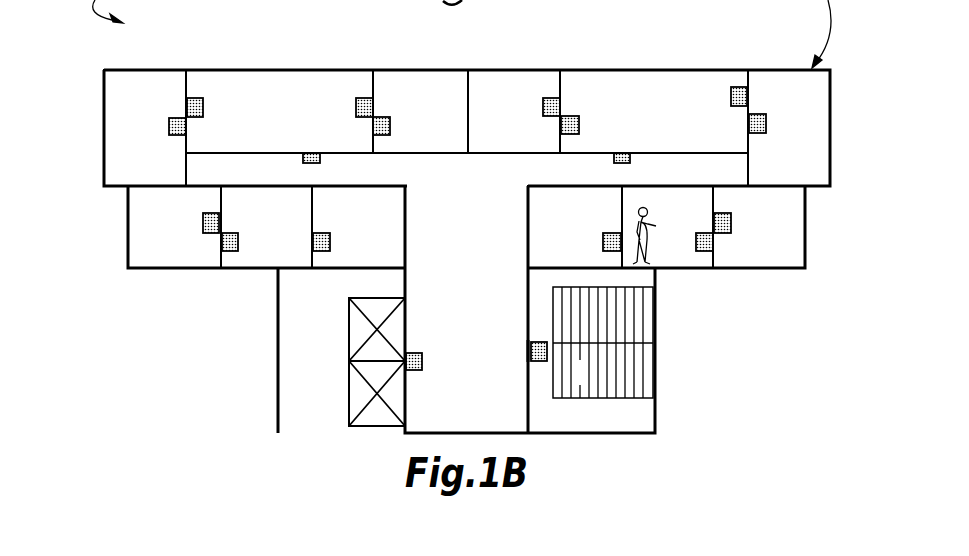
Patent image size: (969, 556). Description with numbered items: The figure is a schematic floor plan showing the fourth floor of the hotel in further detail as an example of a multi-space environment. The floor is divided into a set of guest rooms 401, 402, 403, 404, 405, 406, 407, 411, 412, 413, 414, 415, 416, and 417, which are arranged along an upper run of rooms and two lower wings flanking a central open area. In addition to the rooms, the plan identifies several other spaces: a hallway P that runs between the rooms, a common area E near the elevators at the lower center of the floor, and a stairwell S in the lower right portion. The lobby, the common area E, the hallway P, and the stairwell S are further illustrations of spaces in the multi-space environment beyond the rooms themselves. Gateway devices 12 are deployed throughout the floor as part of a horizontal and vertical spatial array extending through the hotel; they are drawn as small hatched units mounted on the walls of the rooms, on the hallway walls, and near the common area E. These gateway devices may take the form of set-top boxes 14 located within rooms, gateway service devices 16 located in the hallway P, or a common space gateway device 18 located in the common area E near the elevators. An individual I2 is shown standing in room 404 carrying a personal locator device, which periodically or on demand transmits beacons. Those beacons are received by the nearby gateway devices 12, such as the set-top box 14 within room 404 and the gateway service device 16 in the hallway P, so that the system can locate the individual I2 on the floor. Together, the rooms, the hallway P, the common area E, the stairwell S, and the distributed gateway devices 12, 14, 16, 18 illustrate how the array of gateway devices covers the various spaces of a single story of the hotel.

The gateway device 12 is at (196, 98).
The set-top box 14 is at (707, 233).
The gateway service device 16 is at (303, 163).
The common space gateway device 18 is at (527, 357).
The individual I2 is at (633, 222).
The room 401 is at (514, 111).
The room 402 is at (575, 227).
The room 403 is at (606, 113).
The room 404 is at (667, 227).
The room 405 is at (654, 111).
The room 406 is at (759, 227).
The room 407 is at (789, 128).
The room 411 is at (420, 111).
The room 412 is at (358, 227).
The room 413 is at (330, 121).
The room 414 is at (266, 227).
The room 415 is at (279, 111).
The room 416 is at (174, 227).
The room 417 is at (145, 128).
The hallway P is at (473, 225).
The common area E is at (462, 412).
The stairwell S is at (573, 384).